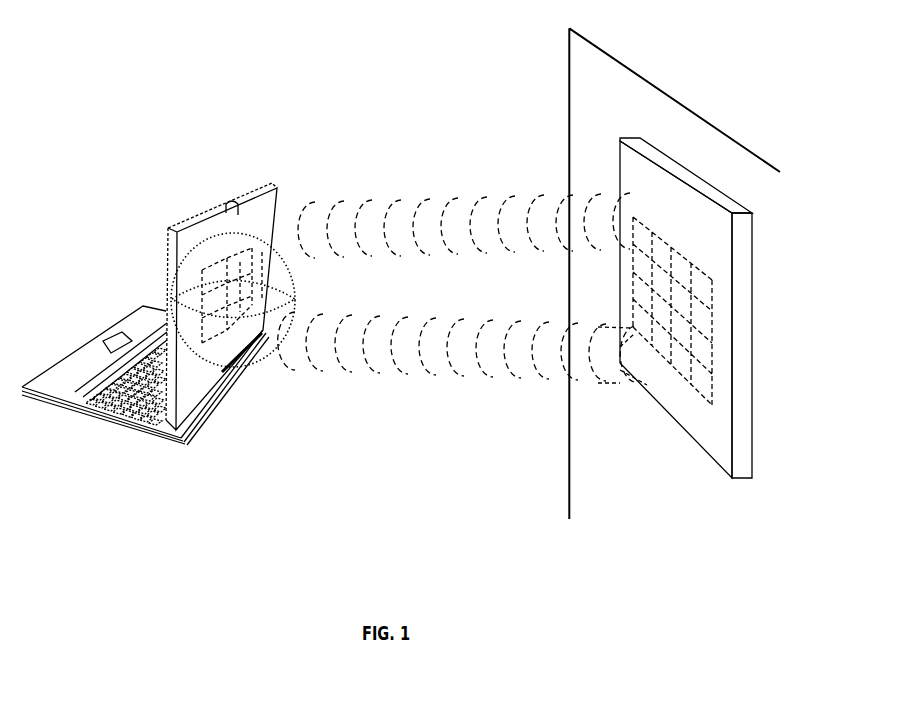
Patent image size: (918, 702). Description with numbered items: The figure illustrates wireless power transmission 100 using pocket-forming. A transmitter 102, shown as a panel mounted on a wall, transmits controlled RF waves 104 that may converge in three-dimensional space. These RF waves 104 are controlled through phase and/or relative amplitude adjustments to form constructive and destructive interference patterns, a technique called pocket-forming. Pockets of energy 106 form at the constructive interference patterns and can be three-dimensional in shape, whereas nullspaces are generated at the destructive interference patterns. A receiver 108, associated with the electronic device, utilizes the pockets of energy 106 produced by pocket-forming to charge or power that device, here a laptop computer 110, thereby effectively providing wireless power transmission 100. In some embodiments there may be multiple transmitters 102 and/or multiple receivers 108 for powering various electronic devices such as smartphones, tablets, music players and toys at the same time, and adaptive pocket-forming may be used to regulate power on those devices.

The wireless power transmission 100 is at (111, 88).
The transmitter 102 is at (660, 165).
The RF waves 104 is at (453, 200).
The pockets of energy 106 is at (193, 247).
The receiver 108 is at (208, 328).
The laptop computer 110 is at (117, 417).